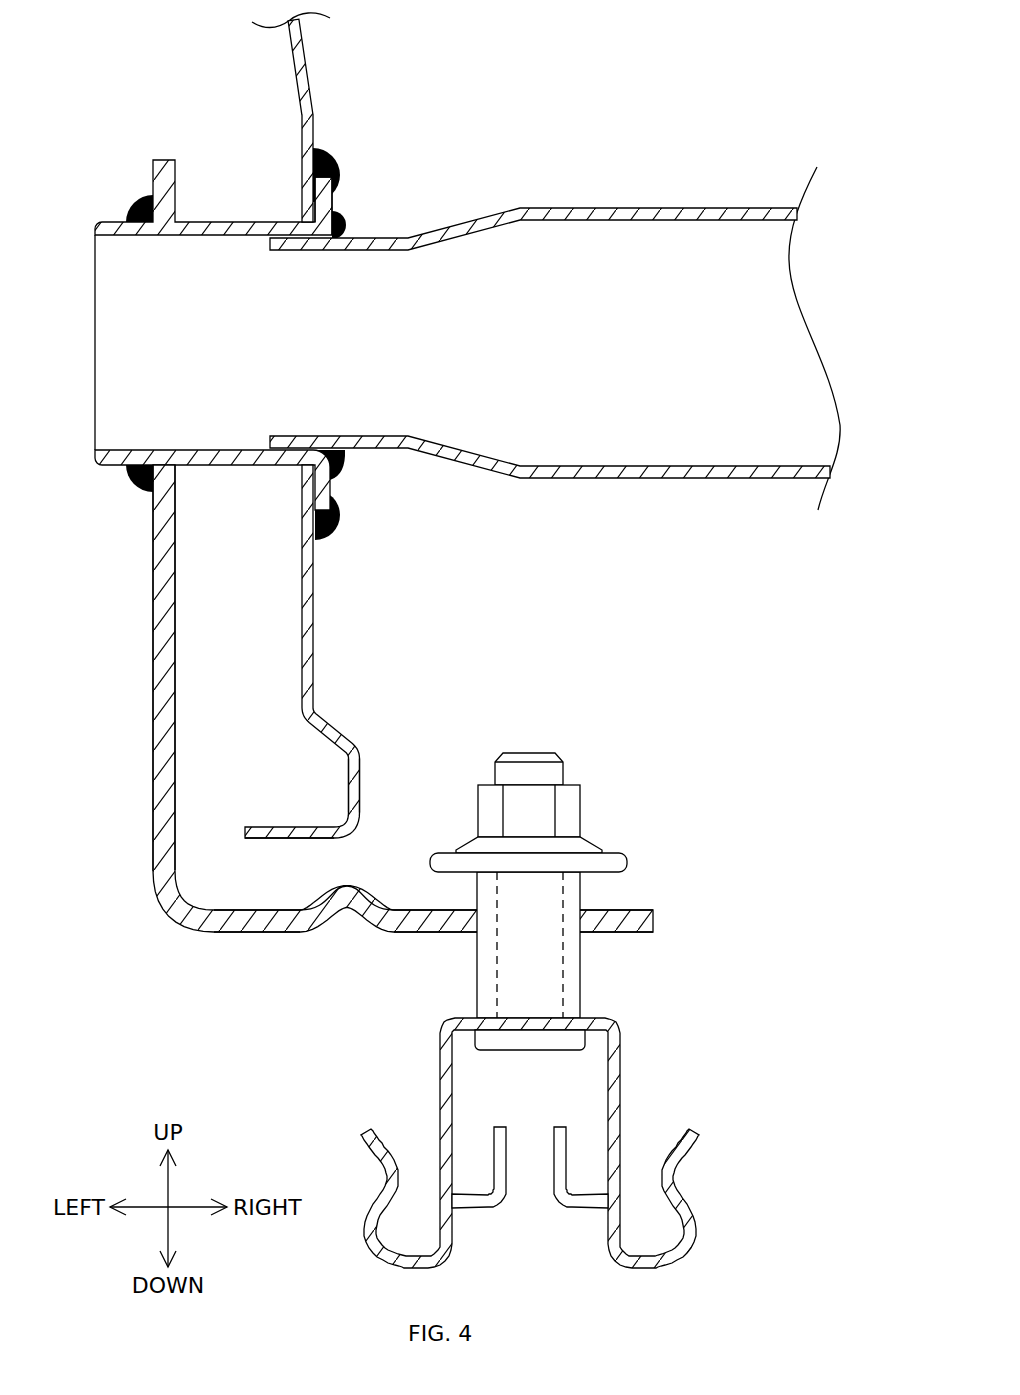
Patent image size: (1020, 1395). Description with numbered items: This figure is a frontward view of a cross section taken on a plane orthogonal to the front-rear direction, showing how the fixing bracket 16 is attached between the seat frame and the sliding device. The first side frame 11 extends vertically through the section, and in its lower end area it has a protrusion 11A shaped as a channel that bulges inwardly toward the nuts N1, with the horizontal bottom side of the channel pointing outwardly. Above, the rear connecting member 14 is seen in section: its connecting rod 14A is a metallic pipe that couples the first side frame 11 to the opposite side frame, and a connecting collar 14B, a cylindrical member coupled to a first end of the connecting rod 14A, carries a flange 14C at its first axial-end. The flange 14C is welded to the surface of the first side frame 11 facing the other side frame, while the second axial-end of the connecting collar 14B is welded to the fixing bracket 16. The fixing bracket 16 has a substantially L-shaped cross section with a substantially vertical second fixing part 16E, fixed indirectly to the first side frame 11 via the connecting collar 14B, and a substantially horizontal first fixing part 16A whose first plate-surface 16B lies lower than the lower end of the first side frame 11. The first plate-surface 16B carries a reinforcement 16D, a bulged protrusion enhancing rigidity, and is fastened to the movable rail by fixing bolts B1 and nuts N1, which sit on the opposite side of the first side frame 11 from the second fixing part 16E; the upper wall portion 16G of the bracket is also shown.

The first side frame 11 is at (312, 72).
The protrusion 11A is at (362, 758).
The rear connecting member 14 is at (467, 364).
The connecting rod 14A is at (493, 208).
The connecting collar 14B is at (233, 221).
The flange 14C is at (334, 208).
The fixing bracket 16 is at (160, 913).
The first fixing part 16A is at (237, 935).
The first plate-surface 16B is at (262, 907).
The reinforcement 16D is at (362, 884).
The second fixing part 16E is at (152, 831).
The upper side wall portion of bracket 16G is at (152, 681).
The nut N1 is at (582, 800).
The fixing bolt B1 is at (567, 985).